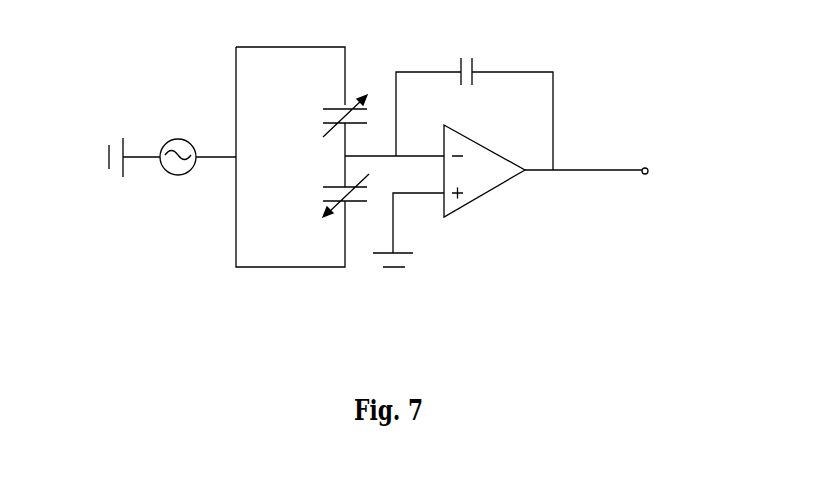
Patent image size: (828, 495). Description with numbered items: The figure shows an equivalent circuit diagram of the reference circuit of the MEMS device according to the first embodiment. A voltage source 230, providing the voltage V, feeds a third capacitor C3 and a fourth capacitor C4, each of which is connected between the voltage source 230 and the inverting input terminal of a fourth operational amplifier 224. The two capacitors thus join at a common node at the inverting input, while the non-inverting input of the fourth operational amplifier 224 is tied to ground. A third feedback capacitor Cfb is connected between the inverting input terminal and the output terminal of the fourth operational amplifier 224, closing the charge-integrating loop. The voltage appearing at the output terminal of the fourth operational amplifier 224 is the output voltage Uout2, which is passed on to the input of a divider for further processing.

The voltage source 230 is at (178, 176).
The fourth operational amplifier 224 is at (479, 197).
The third capacitor C3 is at (327, 116).
The fourth capacitor C4 is at (329, 195).
The third feedback capacitor Cfb is at (474, 102).
The voltage source V is at (172, 120).
The output voltage Uout2 is at (586, 156).